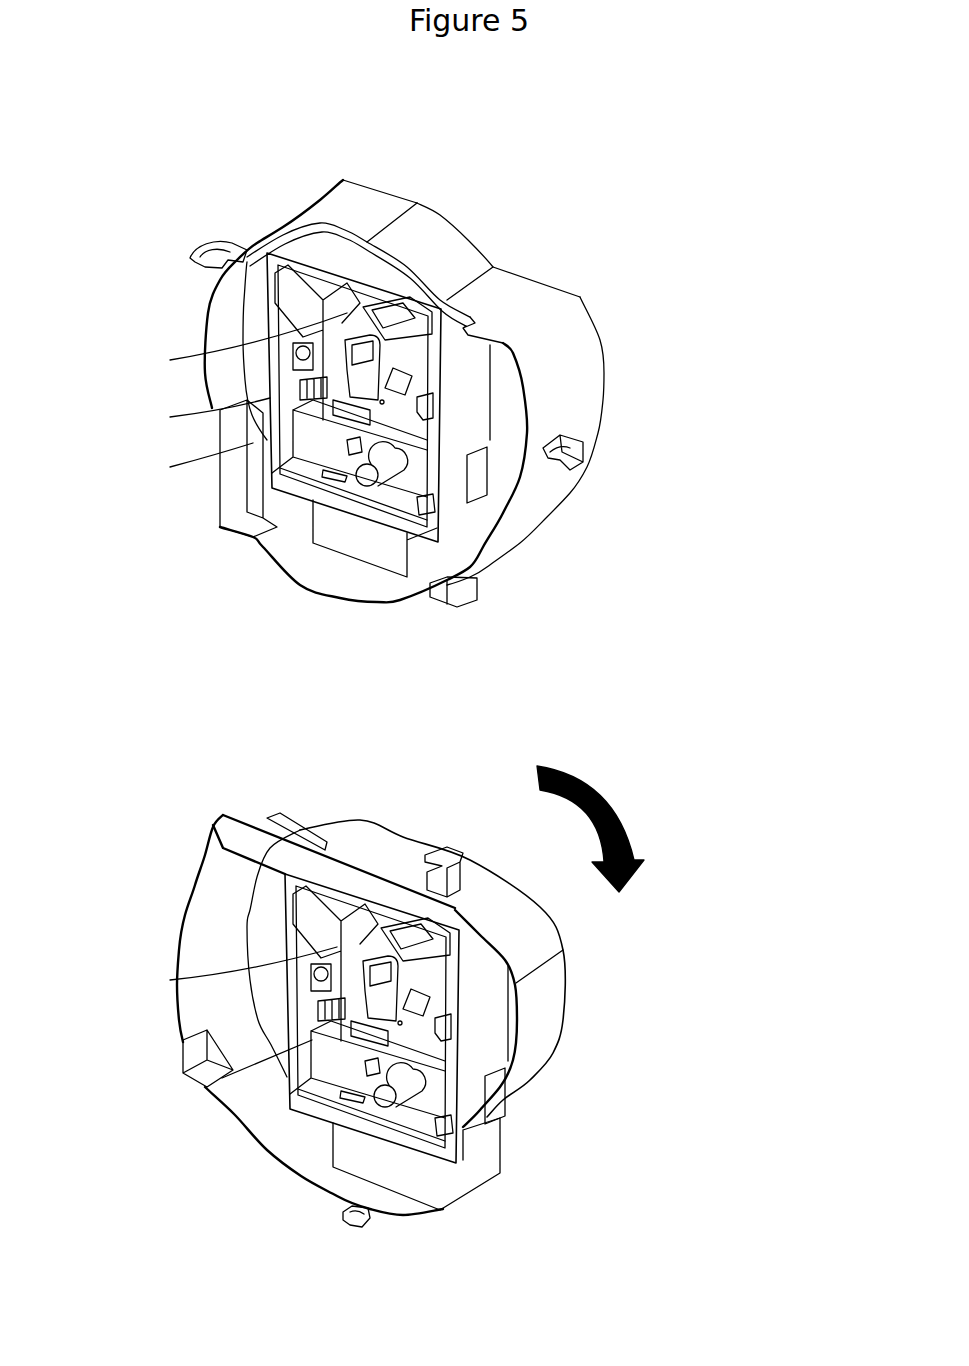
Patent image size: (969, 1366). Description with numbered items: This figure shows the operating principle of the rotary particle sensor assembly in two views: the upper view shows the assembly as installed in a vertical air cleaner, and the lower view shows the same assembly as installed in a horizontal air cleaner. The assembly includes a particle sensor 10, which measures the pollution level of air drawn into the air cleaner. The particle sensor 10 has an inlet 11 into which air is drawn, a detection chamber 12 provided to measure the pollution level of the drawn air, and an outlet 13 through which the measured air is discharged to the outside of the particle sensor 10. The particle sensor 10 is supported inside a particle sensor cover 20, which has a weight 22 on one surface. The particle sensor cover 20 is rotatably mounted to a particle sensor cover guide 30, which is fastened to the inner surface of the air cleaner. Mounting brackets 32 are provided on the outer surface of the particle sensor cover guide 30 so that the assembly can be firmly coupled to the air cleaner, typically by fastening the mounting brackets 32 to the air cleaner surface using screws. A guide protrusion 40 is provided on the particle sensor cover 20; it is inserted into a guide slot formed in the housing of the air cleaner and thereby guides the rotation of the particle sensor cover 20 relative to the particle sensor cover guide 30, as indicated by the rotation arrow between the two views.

The particle sensor 10 is at (80, 352).
The inlet 11 is at (310, 422).
The detection chamber 12 is at (358, 387).
The outlet 13 is at (312, 343).
The particle sensor cover 20 is at (453, 505).
The weight 22 is at (367, 547).
The particle sensor cover guide 30 is at (448, 233).
The mounting brackets 32 is at (212, 240).
The guide protrusion 40 is at (337, 447).